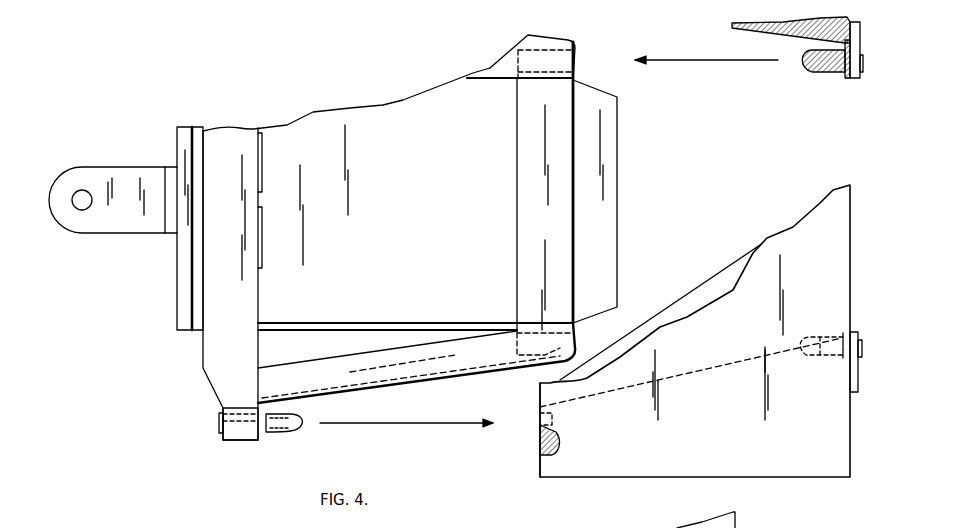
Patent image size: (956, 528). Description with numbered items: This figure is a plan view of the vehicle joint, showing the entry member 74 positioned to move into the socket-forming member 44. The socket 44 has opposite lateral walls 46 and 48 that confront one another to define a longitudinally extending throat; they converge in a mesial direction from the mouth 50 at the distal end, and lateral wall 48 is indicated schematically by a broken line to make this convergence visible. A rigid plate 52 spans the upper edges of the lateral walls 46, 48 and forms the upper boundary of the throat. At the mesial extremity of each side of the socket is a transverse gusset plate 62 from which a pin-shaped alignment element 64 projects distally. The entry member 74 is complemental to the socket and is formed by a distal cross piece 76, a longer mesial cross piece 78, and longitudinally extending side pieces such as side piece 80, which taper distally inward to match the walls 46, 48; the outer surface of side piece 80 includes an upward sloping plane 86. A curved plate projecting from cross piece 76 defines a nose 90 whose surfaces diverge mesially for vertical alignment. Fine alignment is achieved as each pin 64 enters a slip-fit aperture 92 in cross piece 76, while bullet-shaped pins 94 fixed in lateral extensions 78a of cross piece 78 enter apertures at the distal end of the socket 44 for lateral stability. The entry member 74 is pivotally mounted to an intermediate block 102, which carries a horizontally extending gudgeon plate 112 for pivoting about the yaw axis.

The gudgeon plate 112 is at (118, 233).
The entry member 74 is at (200, 369).
The mesial cross piece 78 is at (258, 300).
The lateral extension 78a is at (236, 432).
The bullet shaped pin 94 is at (282, 432).
The intermediate block 102 is at (388, 272).
The upward sloping plane 86 is at (306, 387).
The side piece 80 is at (385, 388).
The distal cross piece 76 is at (527, 172).
The nose 90 is at (617, 177).
The aperture 92 is at (578, 62).
The socket-forming member 44 is at (826, 480).
The mouth 50 is at (540, 398).
The rigid plate 52 is at (712, 347).
The lateral wall 48 is at (693, 385).
The gusset plate 62 is at (858, 370).
The alignment element 64 is at (833, 333).
The lateral wall 46 is at (746, 30).